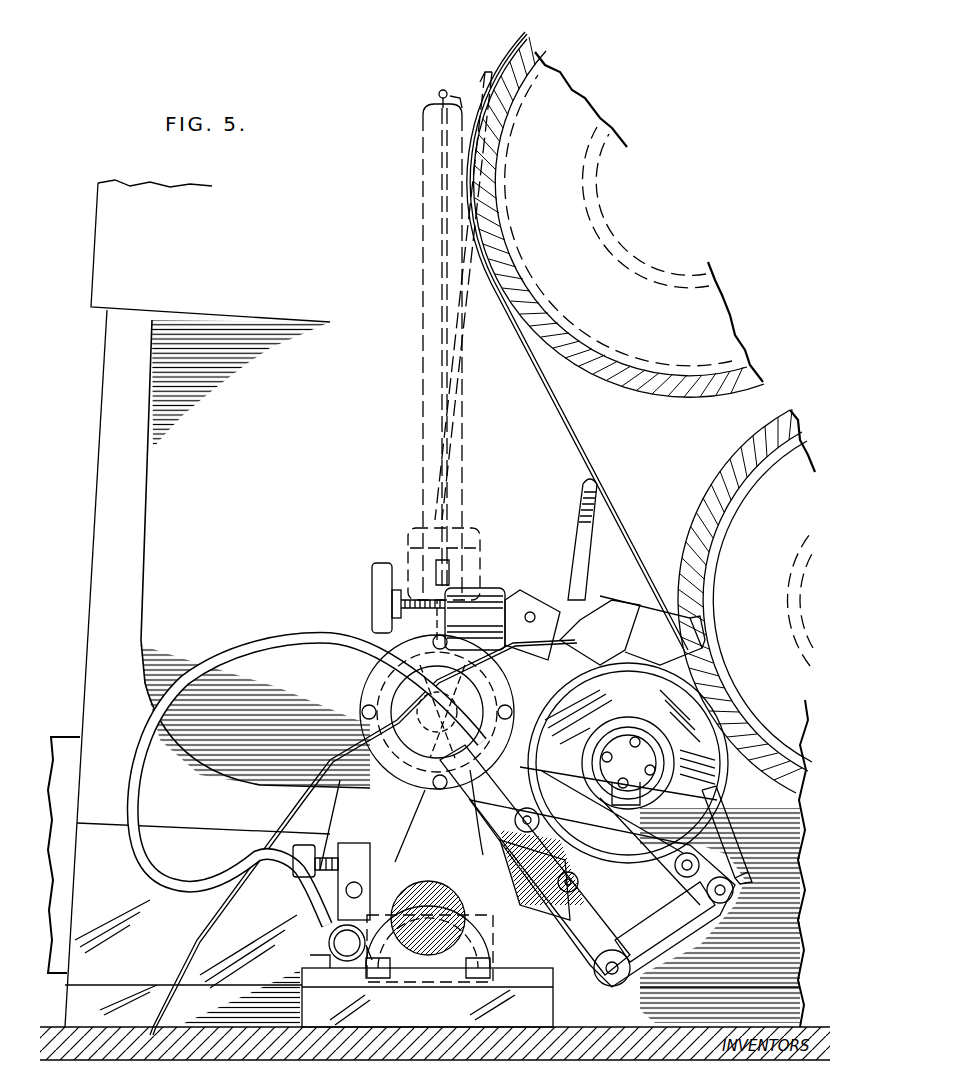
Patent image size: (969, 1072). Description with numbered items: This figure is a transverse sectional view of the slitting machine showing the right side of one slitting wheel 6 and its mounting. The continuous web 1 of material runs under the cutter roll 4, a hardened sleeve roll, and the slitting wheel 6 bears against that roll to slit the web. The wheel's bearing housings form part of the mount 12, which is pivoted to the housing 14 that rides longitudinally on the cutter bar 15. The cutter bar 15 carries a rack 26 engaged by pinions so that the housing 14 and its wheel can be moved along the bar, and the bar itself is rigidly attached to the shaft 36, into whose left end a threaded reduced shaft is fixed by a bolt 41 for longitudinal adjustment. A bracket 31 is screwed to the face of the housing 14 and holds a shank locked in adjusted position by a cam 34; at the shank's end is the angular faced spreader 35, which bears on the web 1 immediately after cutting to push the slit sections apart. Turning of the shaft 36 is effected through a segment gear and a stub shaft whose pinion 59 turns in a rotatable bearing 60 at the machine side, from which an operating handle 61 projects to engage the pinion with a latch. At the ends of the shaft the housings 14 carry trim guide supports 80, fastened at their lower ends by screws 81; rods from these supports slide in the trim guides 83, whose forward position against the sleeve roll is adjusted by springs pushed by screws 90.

The continuous web 1 is at (575, 424).
The cutter roll 4 is at (746, 601).
The slitting wheel 6 is at (624, 784).
The mount 12 is at (715, 812).
The housing 14 is at (587, 866).
The cutter bar 15 is at (428, 919).
The rack 26 is at (437, 95).
The bracket 31 is at (588, 615).
The cam 34 is at (520, 594).
The spreader 35 is at (582, 482).
The shaft 36 is at (437, 945).
The bolt 41 is at (482, 935).
The pinion 59 is at (362, 678).
The rotatable bearing 60 is at (478, 525).
The operating handle 61 is at (421, 412).
The trim guide support 80 is at (490, 596).
The screw 81 is at (520, 738).
The trim guide 83 is at (620, 625).
The screw 90 is at (372, 598).